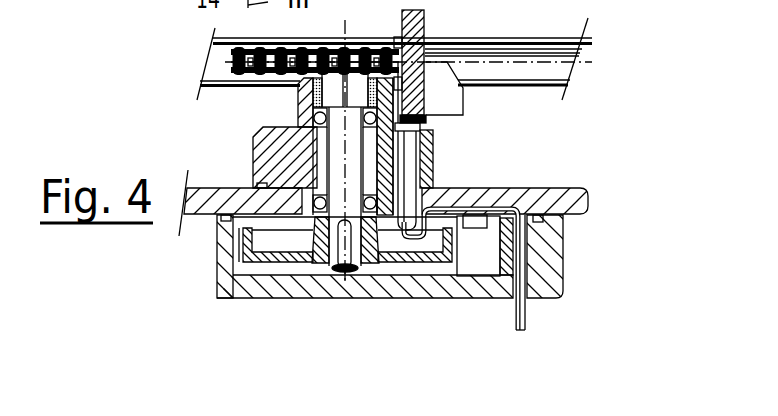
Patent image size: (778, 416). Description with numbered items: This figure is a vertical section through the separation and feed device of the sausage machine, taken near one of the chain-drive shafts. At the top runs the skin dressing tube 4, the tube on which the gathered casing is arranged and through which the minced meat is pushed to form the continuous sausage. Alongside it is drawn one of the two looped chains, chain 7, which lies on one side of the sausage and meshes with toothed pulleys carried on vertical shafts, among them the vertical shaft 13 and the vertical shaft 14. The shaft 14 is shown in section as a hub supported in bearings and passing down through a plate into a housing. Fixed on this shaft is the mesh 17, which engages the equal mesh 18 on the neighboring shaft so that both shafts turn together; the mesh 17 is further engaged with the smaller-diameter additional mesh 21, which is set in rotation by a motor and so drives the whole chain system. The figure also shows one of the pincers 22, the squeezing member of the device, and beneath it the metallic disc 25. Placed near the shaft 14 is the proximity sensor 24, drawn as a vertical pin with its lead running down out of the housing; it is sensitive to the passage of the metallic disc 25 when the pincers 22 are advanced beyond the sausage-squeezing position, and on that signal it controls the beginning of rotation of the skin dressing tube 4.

The skin dressing tube 4 is at (460, 52).
The chain 7 is at (257, 81).
The vertical shaft 13 is at (223, 43).
The vertical shaft 14 is at (346, 192).
The mesh 17 is at (250, 262).
The mesh 18 is at (372, 44).
The additional mesh 21 is at (380, 45).
The pincers 22 is at (461, 104).
The proximity sensor 24 is at (406, 185).
The metallic disc 25 is at (427, 119).